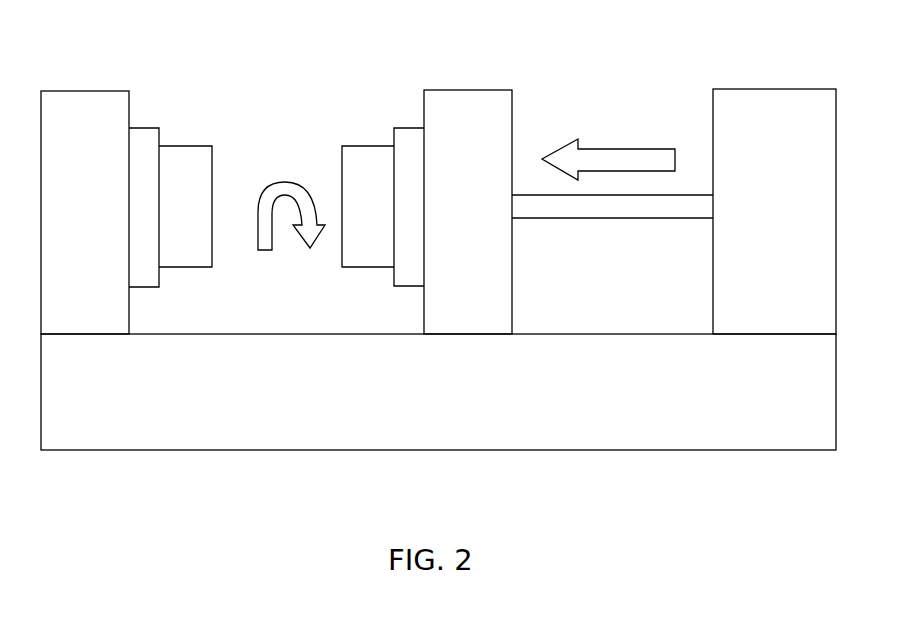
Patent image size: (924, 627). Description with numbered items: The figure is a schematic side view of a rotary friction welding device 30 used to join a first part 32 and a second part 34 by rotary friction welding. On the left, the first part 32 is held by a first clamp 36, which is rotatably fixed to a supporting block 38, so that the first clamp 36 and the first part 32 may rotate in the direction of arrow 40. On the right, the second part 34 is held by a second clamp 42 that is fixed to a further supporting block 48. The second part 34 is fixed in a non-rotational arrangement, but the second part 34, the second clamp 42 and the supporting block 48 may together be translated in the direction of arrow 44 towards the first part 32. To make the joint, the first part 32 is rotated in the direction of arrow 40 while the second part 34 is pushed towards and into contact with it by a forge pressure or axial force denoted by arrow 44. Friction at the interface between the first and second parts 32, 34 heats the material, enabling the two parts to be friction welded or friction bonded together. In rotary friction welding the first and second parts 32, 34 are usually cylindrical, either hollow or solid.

The rotary friction welding device 30 is at (761, 44).
The first part 32 is at (193, 146).
The second part 34 is at (357, 146).
The first clamp 36 is at (145, 128).
The supporting block 38 is at (92, 90).
The arrow 40 is at (287, 182).
The second clamp 42 is at (407, 128).
The arrow 44 is at (635, 149).
The supporting block 48 is at (467, 90).